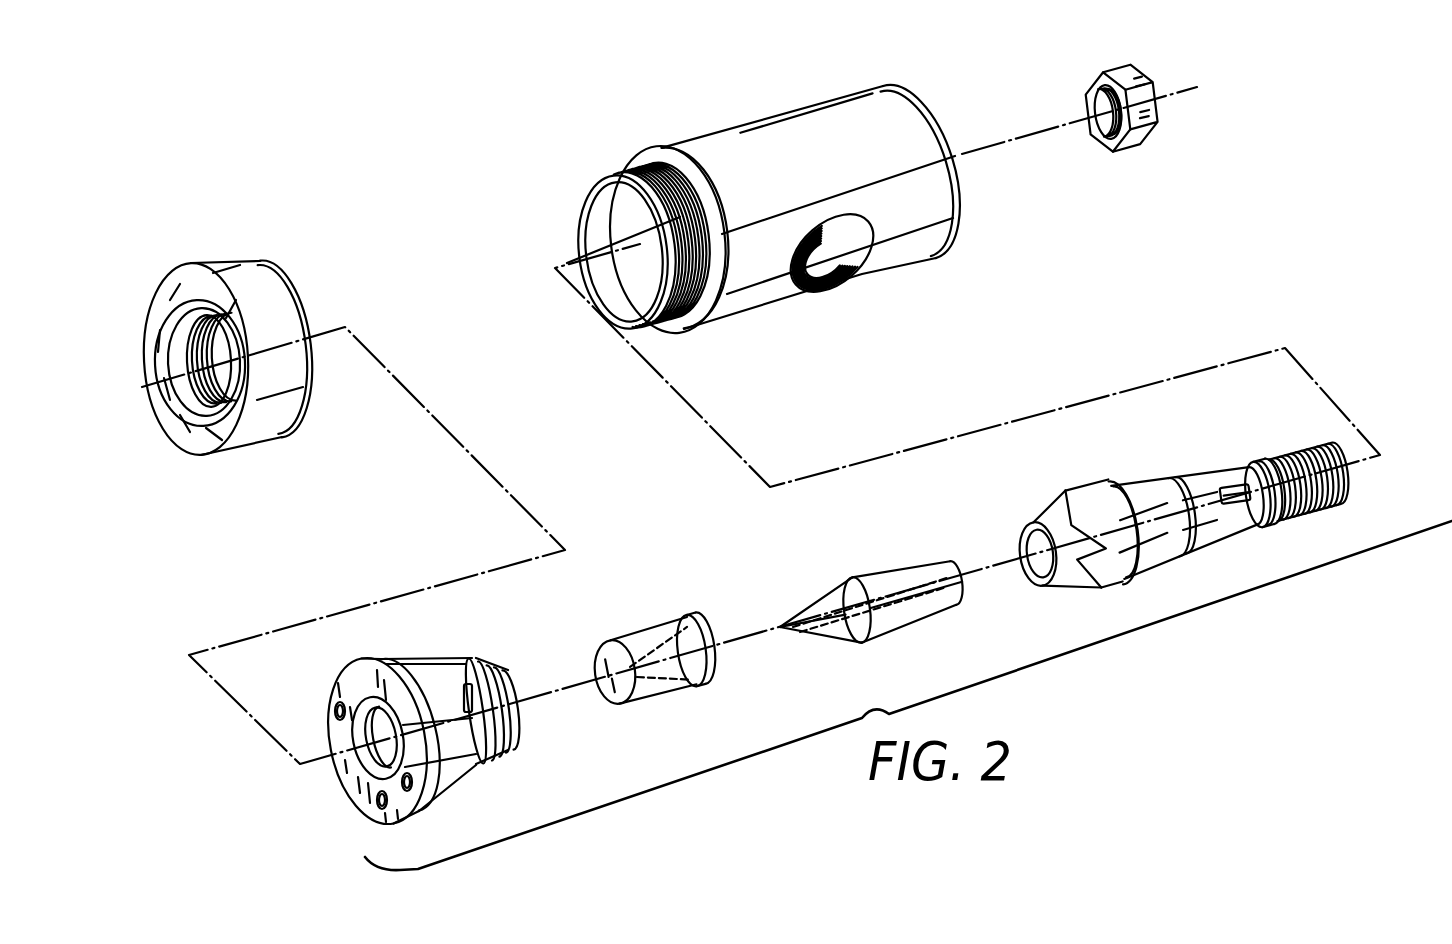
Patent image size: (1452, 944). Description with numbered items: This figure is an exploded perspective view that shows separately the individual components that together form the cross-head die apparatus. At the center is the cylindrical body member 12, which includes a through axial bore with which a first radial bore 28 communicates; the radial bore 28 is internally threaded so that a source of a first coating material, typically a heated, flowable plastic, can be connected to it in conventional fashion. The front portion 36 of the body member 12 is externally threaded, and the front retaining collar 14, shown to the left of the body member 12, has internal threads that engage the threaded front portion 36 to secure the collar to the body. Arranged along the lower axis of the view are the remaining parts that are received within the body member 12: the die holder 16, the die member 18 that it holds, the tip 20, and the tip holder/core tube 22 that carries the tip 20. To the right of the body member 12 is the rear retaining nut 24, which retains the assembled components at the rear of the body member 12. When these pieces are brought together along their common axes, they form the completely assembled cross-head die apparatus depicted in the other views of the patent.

The cylindrical body member 12 is at (756, 201).
The front retaining collar 14 is at (253, 268).
The die holder 16 is at (455, 668).
The die member 18 is at (665, 620).
The tip 20 is at (888, 576).
The tip holder/core tube 22 is at (1184, 431).
The rear retaining nut 24 is at (1145, 142).
The first radial bore 28 is at (851, 216).
The front portion of body member 36 is at (606, 187).